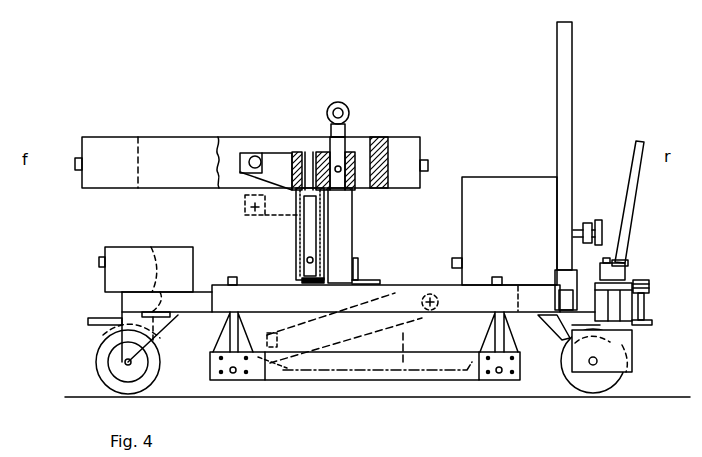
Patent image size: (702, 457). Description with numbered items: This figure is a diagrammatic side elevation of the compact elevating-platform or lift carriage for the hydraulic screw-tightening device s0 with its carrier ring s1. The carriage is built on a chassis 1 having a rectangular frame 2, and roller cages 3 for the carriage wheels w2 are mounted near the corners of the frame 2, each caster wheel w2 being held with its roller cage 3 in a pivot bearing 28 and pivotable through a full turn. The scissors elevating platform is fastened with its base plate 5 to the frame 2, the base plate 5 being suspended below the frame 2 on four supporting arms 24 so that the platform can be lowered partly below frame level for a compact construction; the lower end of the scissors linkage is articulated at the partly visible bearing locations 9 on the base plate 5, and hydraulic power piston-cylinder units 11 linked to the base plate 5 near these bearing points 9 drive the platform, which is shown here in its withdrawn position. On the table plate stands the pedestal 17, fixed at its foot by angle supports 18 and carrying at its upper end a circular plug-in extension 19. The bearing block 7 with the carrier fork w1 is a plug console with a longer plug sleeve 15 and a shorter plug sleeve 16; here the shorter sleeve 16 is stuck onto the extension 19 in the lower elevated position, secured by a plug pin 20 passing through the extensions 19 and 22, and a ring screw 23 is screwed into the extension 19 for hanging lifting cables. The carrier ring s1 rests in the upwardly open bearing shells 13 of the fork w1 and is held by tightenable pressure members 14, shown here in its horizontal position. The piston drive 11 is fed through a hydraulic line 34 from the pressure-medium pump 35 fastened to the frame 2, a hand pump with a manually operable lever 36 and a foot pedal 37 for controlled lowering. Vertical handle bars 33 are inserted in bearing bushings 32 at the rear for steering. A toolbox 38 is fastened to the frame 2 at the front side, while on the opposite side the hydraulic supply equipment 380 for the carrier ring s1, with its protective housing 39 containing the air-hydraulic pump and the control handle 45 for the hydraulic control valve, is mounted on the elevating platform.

The chassis 1 is at (110, 298).
The rectangular frame 2 is at (208, 290).
The roller cage 3 is at (158, 328).
The base plate 5 is at (288, 378).
The bearing block 7 is at (300, 152).
The bearing locations 9 is at (257, 388).
The hydraulic power piston-cylinder unit 11 is at (412, 388).
The bearing shell 13 is at (250, 158).
The pressure member 14 is at (262, 156).
The longer plug sleeve 15 is at (297, 265).
The shorter plug sleeve 16 is at (384, 148).
The pedestal 17 is at (341, 231).
The angle support 18 is at (358, 266).
The plug-in extension 19 is at (341, 146).
The plug pin 20 is at (340, 172).
The plug-in extension 22 is at (310, 258).
The ring screw 23 is at (339, 104).
The supporting arm 24 is at (215, 359).
The pivot bearing 28 is at (156, 252).
The bearing bushing 32 is at (556, 280).
The handle bar 33 is at (565, 61).
The hydraulic line 34 is at (540, 325).
The pressure-medium pump 35 is at (642, 313).
The manually operable lever 36 is at (628, 204).
The foot pedal 37 is at (647, 284).
The toolbox 38 is at (124, 258).
The protective housing 39 is at (510, 190).
The control handle 45 is at (596, 223).
The hydraulic supply equipment 380 is at (462, 226).
The screw-tightening device s0 is at (156, 135).
The carrier ring s1 is at (181, 150).
The carrier fork w1 is at (280, 173).
The carriage wheel w2 is at (106, 371).